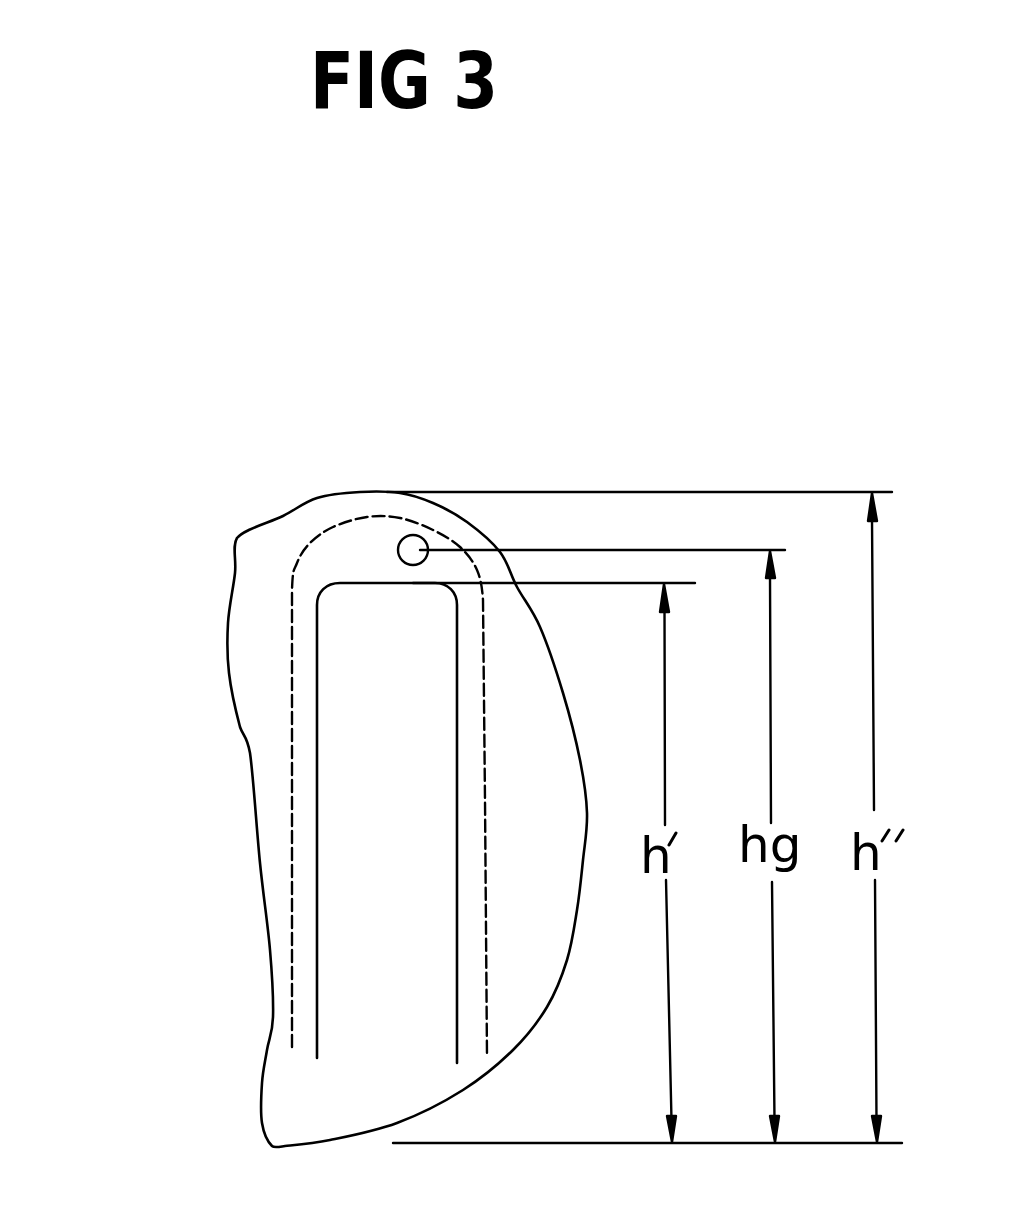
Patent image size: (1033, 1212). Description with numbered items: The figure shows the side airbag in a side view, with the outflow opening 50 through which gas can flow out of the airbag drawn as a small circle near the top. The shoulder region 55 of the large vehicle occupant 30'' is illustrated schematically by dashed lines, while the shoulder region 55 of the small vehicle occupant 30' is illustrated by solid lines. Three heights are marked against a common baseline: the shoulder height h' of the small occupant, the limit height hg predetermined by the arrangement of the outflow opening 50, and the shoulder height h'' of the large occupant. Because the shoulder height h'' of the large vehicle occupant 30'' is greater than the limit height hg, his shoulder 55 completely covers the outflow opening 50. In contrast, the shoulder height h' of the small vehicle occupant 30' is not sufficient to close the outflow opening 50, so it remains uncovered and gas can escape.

The small vehicle occupant 30' is at (250, 823).
The large vehicle occupant 30'' is at (362, 794).
The outflow opening 50 is at (423, 538).
The shoulder region 55 is at (338, 527).